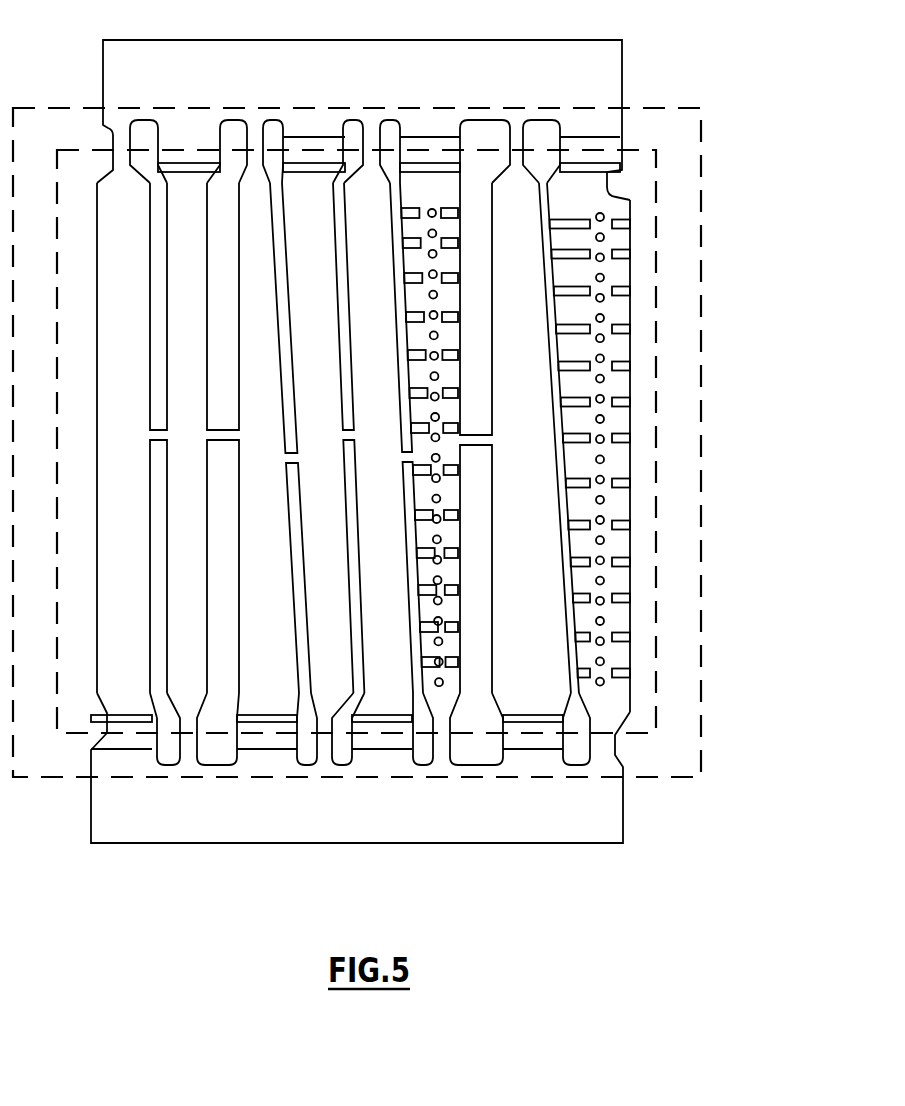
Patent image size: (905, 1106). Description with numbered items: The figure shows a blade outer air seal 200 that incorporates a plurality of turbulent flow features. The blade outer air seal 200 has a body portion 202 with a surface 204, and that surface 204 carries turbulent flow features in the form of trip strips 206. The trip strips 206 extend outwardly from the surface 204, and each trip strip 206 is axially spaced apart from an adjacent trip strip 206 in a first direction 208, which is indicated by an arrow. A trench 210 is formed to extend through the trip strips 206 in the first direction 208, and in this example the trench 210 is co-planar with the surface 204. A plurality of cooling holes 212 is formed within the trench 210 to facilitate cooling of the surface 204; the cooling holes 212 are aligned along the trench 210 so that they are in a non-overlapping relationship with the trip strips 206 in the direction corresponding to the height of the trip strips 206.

The blade outer air seal 200 is at (748, 346).
The body portion 202 is at (618, 808).
The surface 204 is at (623, 200).
The trip strips 206 is at (418, 590).
The first direction 208 is at (522, 503).
The trench 210 is at (434, 221).
The cooling holes 212 is at (437, 297).